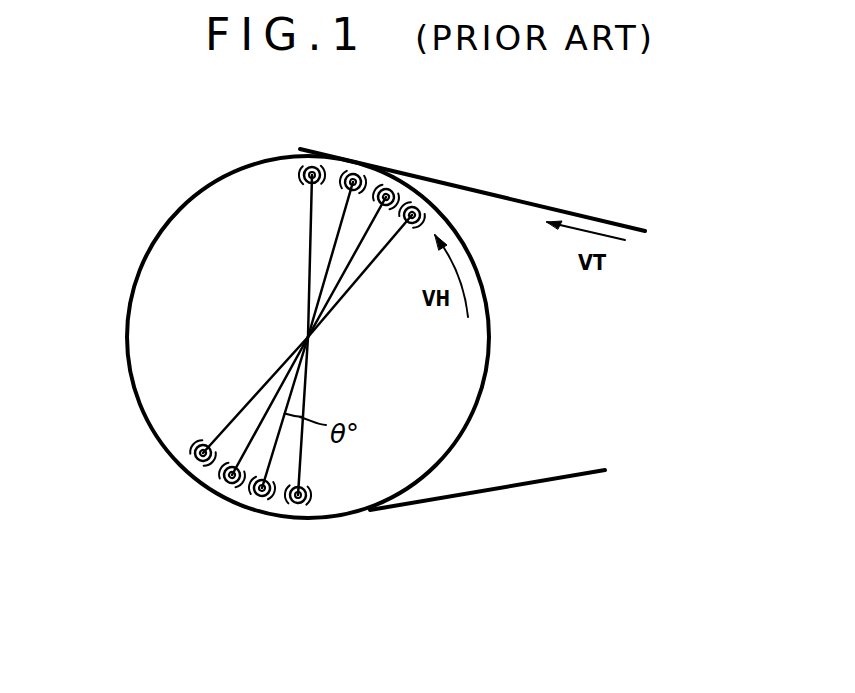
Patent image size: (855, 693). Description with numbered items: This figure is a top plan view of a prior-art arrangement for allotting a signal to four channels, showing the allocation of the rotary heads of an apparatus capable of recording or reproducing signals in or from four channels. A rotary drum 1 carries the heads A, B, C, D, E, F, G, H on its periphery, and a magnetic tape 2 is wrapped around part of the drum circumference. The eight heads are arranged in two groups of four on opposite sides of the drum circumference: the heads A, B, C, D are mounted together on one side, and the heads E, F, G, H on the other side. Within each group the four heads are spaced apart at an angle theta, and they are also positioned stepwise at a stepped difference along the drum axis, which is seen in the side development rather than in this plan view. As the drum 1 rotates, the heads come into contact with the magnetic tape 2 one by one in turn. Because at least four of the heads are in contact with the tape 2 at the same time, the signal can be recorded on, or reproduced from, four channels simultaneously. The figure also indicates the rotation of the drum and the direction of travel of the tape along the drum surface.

The rotary drum 1 is at (163, 222).
The magnetic tape 2 is at (513, 198).
The head A is at (313, 505).
The head B is at (278, 500).
The head C is at (240, 487).
The head D is at (208, 465).
The head E is at (306, 165).
The head F is at (346, 172).
The head G is at (383, 187).
The head H is at (420, 205).